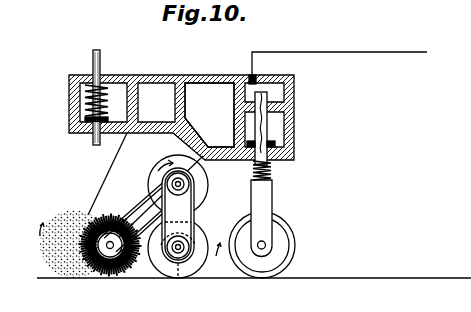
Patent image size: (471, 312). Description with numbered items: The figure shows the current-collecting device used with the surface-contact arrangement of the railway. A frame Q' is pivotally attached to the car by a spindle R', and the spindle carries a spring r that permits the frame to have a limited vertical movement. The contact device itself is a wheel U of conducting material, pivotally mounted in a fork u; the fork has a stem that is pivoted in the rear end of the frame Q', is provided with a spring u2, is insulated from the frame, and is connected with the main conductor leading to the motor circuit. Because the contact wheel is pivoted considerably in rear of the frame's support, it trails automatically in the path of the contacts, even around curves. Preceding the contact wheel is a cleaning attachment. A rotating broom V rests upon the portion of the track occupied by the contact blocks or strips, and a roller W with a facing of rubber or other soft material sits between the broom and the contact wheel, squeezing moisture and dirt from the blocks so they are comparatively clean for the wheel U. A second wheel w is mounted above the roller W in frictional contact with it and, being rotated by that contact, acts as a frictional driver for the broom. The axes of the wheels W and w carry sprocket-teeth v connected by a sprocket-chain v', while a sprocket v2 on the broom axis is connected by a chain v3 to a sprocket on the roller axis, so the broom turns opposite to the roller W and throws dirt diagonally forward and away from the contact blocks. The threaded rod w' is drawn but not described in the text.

The spindle R' is at (113, 97).
The spring r is at (100, 103).
The frame Q' is at (209, 115).
The threaded adjusting rod w' is at (291, 128).
The spring u2 is at (272, 171).
The fork u is at (268, 201).
The contact wheel U is at (269, 245).
The rotating broom V is at (80, 190).
The sprocket v2 is at (113, 225).
The sprocket chain v3 is at (137, 215).
The second wheel w is at (188, 185).
The roller W is at (197, 228).
The sprocket-teeth v is at (197, 215).
The sprocket chain v' is at (197, 227).